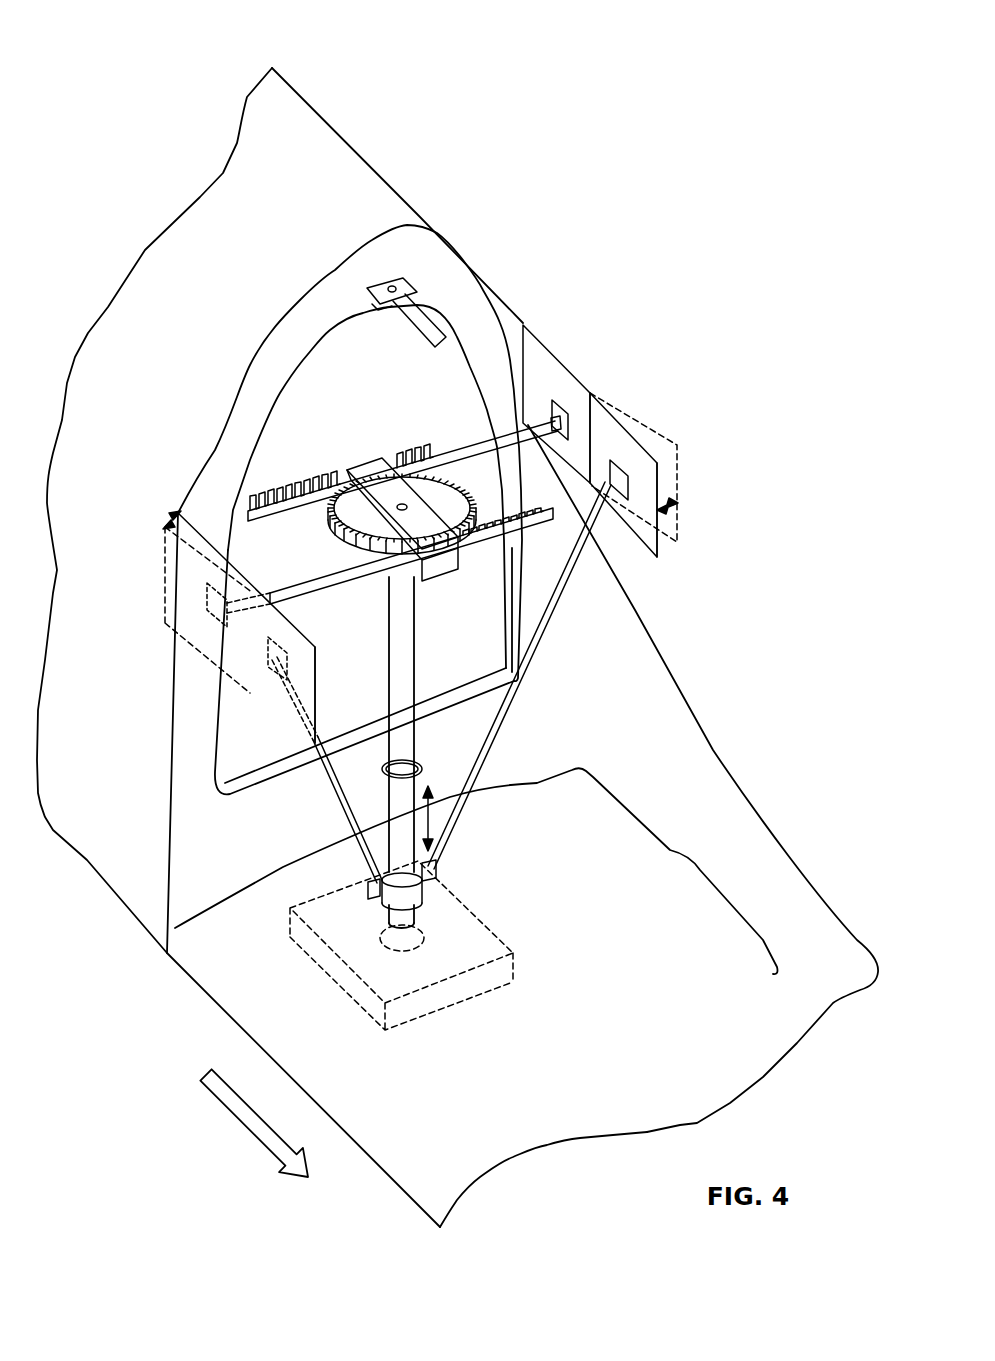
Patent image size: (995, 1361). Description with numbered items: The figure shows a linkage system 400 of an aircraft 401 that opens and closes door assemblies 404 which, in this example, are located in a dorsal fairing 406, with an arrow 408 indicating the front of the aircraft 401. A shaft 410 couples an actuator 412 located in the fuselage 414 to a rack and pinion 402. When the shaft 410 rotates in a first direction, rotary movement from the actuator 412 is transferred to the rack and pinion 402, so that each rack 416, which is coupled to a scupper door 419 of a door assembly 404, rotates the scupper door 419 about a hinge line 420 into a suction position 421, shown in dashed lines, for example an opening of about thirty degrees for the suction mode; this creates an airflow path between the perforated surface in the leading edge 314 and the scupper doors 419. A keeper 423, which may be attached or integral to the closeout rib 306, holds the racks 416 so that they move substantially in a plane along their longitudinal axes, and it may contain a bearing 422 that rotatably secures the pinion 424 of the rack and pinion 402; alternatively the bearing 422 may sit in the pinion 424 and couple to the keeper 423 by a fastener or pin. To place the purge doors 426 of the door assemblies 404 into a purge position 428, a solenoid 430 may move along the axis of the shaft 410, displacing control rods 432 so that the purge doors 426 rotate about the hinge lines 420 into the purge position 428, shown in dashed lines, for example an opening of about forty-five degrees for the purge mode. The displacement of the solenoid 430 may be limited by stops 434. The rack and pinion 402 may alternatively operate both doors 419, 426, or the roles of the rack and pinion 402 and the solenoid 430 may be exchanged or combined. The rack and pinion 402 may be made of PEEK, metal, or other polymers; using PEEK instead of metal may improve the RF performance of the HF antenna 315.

The linkage system 400 is at (784, 134).
The aircraft 401 is at (116, 96).
The closeout rib 306 is at (313, 327).
The leading edge 314 is at (315, 123).
The HF antenna 315 is at (437, 327).
The rack and pinion 402 is at (304, 464).
The door assemblies 404 is at (633, 380).
The dorsal fairing 406 is at (704, 863).
The arrow 408 is at (222, 1108).
The shaft 410 is at (408, 678).
The actuator 412 is at (515, 967).
The fuselage 414 is at (545, 1140).
The rack 416 is at (258, 508).
The scupper door 419 is at (540, 357).
The hinge line 420 is at (590, 397).
The suction position 421 is at (163, 582).
The bearing 422 is at (403, 503).
The keeper 423 is at (373, 470).
The pinion 424 is at (177, 513).
The purge door 426 is at (660, 533).
The purge position 428 is at (680, 483).
The solenoid 430 is at (428, 887).
The control rods 432 is at (540, 638).
The stops 434 is at (425, 772).